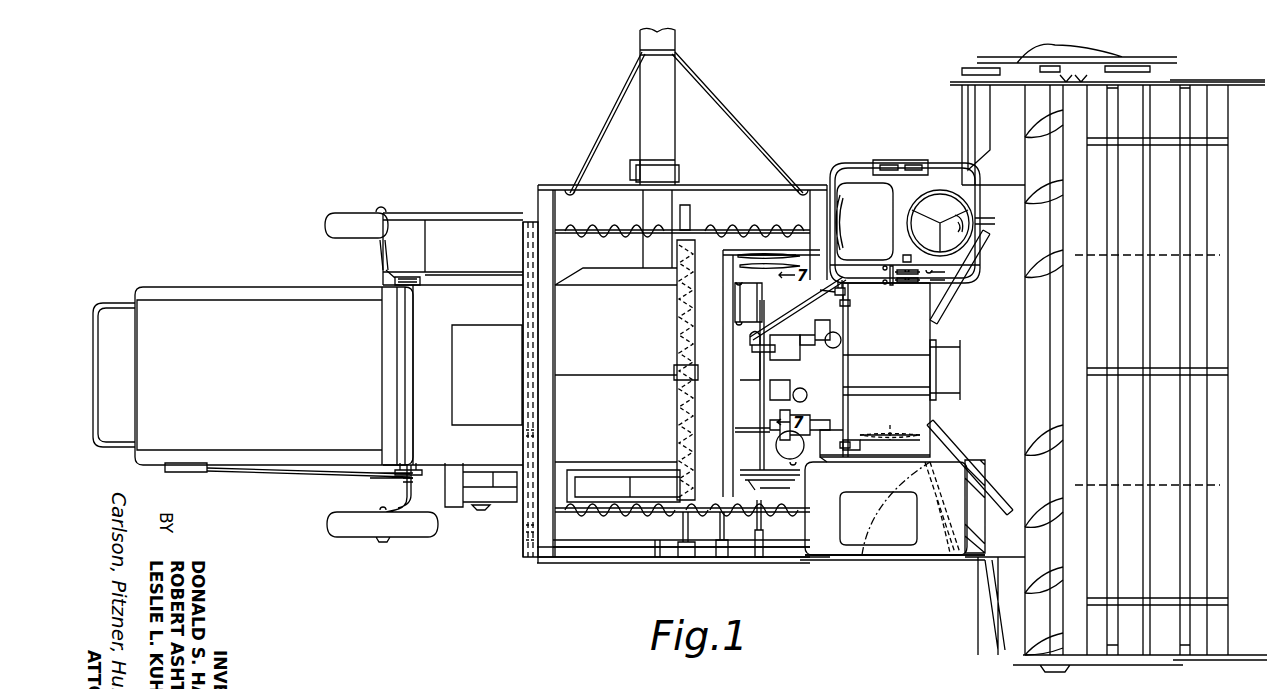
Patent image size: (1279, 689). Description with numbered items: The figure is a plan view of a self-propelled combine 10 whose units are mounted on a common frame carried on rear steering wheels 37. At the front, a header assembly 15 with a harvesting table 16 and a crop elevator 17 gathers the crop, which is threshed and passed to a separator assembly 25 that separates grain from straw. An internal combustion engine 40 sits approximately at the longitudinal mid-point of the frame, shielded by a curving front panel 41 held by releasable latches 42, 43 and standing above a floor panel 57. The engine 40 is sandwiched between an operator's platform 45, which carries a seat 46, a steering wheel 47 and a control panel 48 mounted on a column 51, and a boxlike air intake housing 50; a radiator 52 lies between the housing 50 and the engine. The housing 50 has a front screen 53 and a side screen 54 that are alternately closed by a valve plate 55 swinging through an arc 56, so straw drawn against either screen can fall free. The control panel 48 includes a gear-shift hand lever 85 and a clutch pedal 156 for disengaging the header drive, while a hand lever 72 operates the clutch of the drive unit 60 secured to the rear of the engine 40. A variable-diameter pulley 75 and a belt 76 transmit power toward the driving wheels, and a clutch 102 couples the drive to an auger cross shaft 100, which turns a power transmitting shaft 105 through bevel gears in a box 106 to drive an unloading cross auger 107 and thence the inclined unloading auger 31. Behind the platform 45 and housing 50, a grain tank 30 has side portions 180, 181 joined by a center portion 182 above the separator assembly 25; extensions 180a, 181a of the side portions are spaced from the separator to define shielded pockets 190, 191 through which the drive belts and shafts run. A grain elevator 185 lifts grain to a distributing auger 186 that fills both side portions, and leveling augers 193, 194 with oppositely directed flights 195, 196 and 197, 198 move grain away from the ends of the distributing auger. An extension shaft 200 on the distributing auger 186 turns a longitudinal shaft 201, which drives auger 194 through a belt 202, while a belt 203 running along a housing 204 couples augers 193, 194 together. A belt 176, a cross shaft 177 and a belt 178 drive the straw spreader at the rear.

The self-propelled combine 10 is at (454, 204).
The header assembly 15 is at (1124, 56).
The harvesting table 16 is at (1095, 202).
The crop elevator 17 is at (998, 358).
The separator assembly 25 is at (284, 277).
The grain tank 30 is at (611, 177).
The unloading auger 31 is at (668, 133).
The rear steering wheels 37 is at (350, 212).
The internal combustion engine 40 is at (830, 380).
The front panel 41 is at (925, 345).
The releasable latch 42 is at (848, 303).
The releasable latch 43 is at (853, 441).
The operator's platform 45 is at (916, 160).
The seat 46 is at (862, 183).
The steering wheel 47 is at (945, 190).
The control panel 48 is at (900, 270).
The air intake housing 50 is at (862, 560).
The column 51 is at (862, 275).
The radiator 52 is at (920, 433).
The front screen 53 is at (843, 475).
The side screen 54 is at (922, 560).
The valve plate 55 is at (940, 505).
The arc 56 is at (878, 510).
The floor panel 57 is at (838, 326).
The drive unit 60 is at (746, 386).
The hand lever 72 is at (840, 290).
The pulley 75 is at (750, 255).
The belt 76 is at (786, 262).
The hand lever 85 is at (945, 290).
The auger cross shaft 100 is at (760, 428).
The clutch 102 is at (741, 344).
The power transmitting shaft 105 is at (728, 558).
The box 106 is at (760, 560).
The unloading cross auger 107 is at (672, 190).
The clutch pedal 156 is at (907, 254).
The belt 176 is at (416, 286).
The cross shaft 177 is at (413, 466).
The belt 178 is at (315, 478).
The side portion 180 is at (574, 184).
The extension 180a is at (790, 186).
The side portion 181 is at (622, 555).
The extension 181a is at (805, 562).
The center portion 182 is at (538, 352).
The grain elevator 185 is at (600, 470).
The distributing auger 186 is at (677, 415).
The shielded pocket 190 is at (735, 278).
The shielded pocket 191 is at (750, 470).
The leveling auger 193 is at (605, 224).
The leveling auger 194 is at (647, 527).
The flight 195 is at (612, 242).
The flight 196 is at (712, 228).
The flight 197 is at (605, 522).
The flight 198 is at (745, 518).
The extension shaft 200 is at (686, 552).
The longitudinal shaft 201 is at (588, 562).
The belt 202 is at (527, 540).
The belt 203 is at (524, 441).
The housing 204 is at (525, 310).